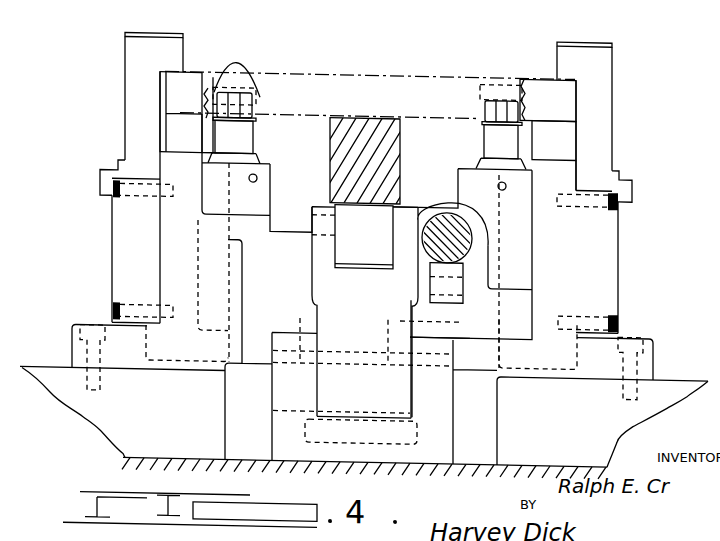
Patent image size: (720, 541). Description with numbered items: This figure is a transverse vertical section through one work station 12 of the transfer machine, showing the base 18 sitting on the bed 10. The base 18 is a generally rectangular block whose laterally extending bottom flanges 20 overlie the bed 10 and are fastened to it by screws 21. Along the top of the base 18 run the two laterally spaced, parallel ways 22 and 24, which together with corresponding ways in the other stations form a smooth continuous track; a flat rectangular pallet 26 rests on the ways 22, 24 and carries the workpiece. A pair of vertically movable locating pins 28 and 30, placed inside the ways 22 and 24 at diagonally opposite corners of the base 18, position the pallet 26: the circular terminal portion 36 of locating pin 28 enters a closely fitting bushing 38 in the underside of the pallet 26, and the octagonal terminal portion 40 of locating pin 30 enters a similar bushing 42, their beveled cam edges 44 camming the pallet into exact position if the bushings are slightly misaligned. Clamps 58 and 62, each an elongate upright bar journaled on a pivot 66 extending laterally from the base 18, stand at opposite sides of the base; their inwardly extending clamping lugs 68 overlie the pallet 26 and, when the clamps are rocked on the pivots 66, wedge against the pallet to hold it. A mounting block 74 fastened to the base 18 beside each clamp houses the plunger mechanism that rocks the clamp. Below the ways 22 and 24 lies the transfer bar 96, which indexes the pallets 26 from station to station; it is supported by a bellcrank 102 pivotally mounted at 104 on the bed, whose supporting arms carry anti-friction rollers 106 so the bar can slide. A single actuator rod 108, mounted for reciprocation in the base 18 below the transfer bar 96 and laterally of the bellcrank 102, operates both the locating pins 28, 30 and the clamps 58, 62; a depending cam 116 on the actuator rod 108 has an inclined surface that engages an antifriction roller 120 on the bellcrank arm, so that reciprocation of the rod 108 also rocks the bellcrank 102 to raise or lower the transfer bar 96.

The bed 10 is at (432, 453).
The station 12 is at (375, 42).
The base 18 is at (562, 272).
The bottom flanges 20 is at (72, 344).
The screws 21 is at (82, 378).
The way 22 is at (560, 127).
The way 24 is at (178, 124).
The pallet 26 is at (331, 68).
The locating pin 28 is at (485, 138).
The locating pin 30 is at (242, 137).
The terminal portion 36 is at (498, 92).
The bushing 38 is at (521, 99).
The terminal portion 40 is at (252, 85).
The bushing 42 is at (262, 96).
The beveled cam edges 44 is at (224, 82).
The clamp 58 is at (135, 77).
The clamp 62 is at (593, 148).
The pivot 66 is at (100, 180).
The clamping lugs 68 is at (176, 39).
The mounting block 74 is at (122, 232).
The transfer bar 96 is at (398, 134).
The bellcrank 102 is at (392, 395).
The pivot 104 is at (442, 393).
The anti-friction rollers 106 is at (399, 198).
The actuator rod 108 is at (462, 222).
The depending cams 116 is at (467, 266).
The antifriction roller 120 is at (460, 304).